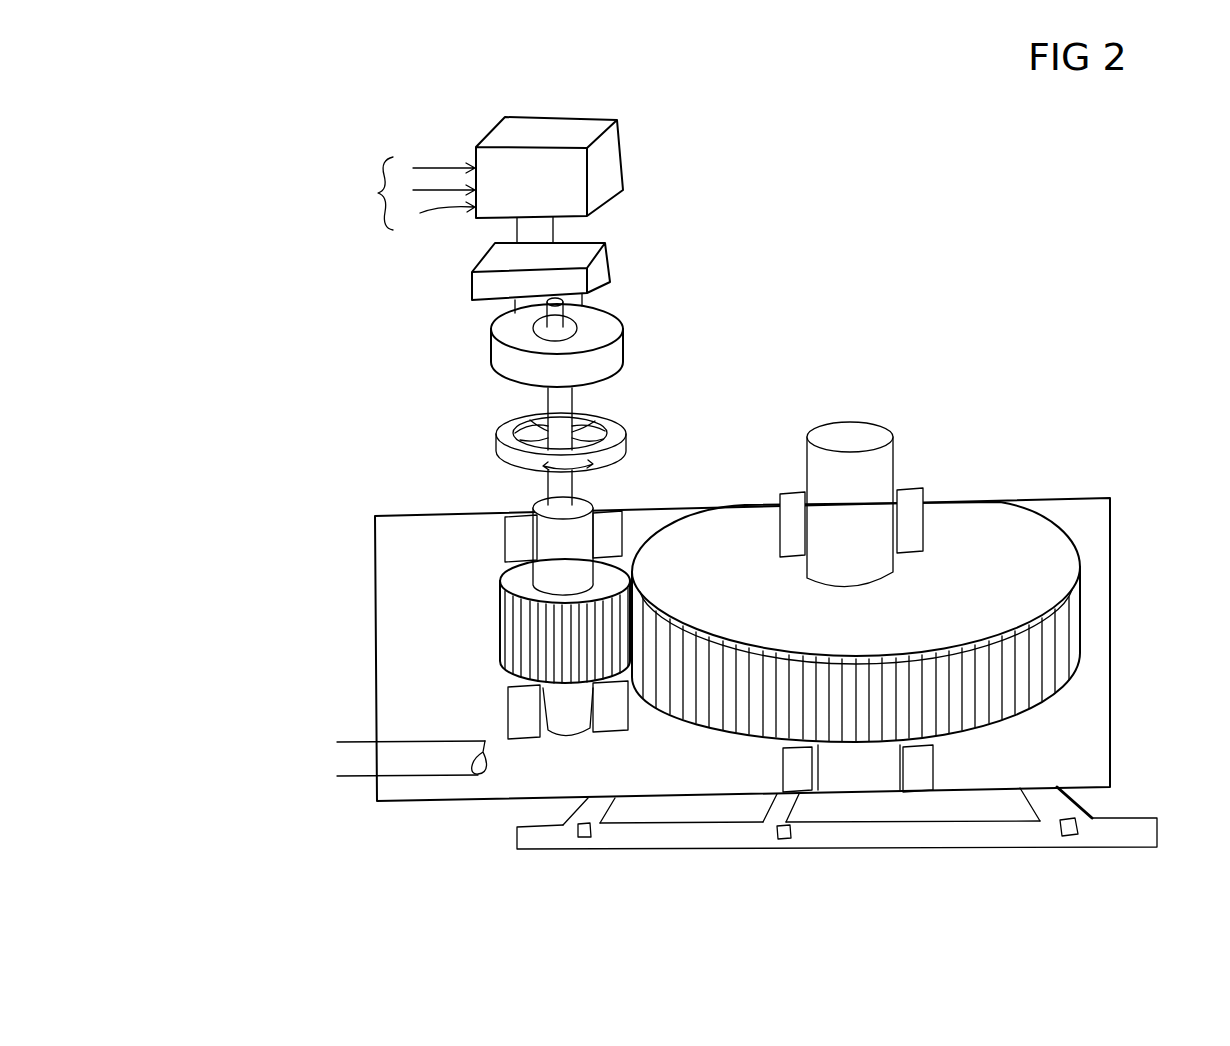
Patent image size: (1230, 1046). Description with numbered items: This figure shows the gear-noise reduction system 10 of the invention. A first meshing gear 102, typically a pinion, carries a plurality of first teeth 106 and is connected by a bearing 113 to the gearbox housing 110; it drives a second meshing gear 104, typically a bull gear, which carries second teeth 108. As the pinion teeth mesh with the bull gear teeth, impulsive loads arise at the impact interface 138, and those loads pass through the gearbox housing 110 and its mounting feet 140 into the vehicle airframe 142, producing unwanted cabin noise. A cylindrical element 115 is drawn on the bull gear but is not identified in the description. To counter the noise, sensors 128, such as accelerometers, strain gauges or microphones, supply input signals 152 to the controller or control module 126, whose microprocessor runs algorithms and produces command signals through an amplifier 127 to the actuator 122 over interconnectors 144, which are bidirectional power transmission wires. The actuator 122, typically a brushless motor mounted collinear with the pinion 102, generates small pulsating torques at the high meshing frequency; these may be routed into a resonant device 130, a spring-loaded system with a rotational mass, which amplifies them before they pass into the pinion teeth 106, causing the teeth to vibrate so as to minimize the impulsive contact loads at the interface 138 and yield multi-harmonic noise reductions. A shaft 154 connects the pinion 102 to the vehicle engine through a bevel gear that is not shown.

The system 10 is at (922, 198).
The first meshing gear 102 is at (490, 646).
The second meshing gear 104 is at (870, 626).
The first teeth 106 is at (500, 601).
The second teeth 108 is at (660, 613).
The gearbox housing 110 is at (373, 644).
The bearing 113 is at (578, 523).
The platter hub 115 is at (892, 462).
The actuator 122 is at (557, 346).
The controller 126 is at (549, 180).
The amplifier 127 is at (541, 278).
The sensors 128 is at (577, 832).
The resonant device 130 is at (620, 432).
The impact interface 138 is at (641, 690).
The gearbox mounting feet 140 is at (577, 811).
The vehicle airframe 142 is at (1164, 813).
The interconnectors 144 is at (585, 296).
The input signals 152 is at (415, 240).
The shaft 154 is at (337, 742).